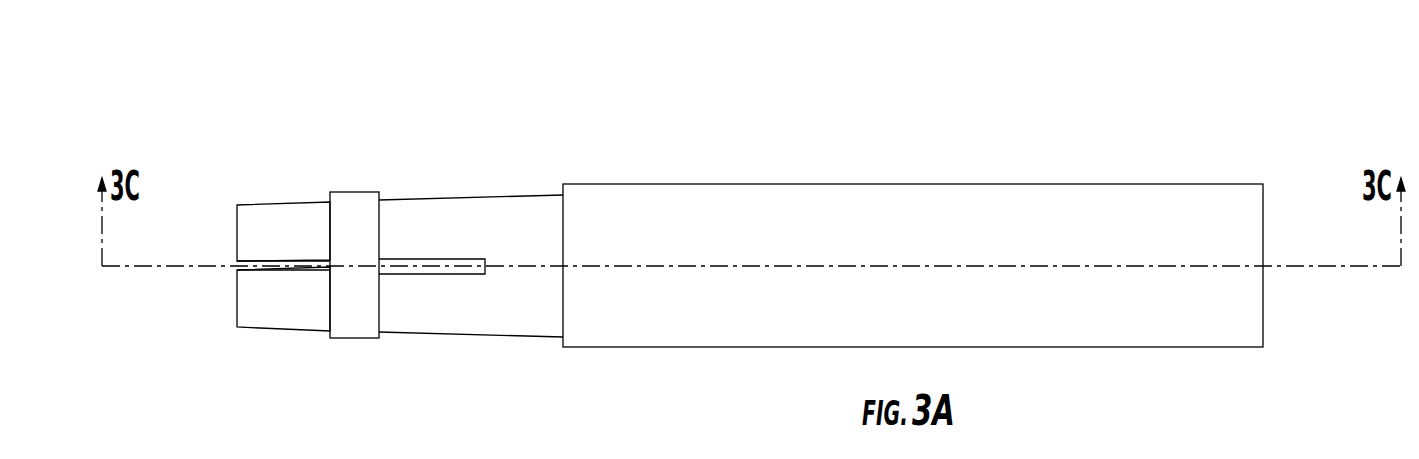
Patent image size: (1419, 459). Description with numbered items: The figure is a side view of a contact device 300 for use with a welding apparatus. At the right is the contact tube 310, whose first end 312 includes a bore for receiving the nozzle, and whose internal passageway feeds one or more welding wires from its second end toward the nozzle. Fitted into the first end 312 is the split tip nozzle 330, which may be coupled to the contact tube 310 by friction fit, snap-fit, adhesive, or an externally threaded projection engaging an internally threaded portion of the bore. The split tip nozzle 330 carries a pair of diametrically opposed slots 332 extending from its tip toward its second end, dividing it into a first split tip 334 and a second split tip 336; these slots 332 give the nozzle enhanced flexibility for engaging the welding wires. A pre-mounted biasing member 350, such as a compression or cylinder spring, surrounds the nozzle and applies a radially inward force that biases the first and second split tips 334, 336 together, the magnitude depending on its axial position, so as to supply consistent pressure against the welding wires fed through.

The contact device 300 is at (318, 79).
The contact tube 310 is at (1138, 184).
The first end 312 is at (605, 183).
The split tip nozzle 330 is at (257, 203).
The slots 332 is at (270, 267).
The first split tip 334 is at (305, 213).
The second split tip 336 is at (250, 308).
The pre-mounted biasing member 350 is at (360, 330).